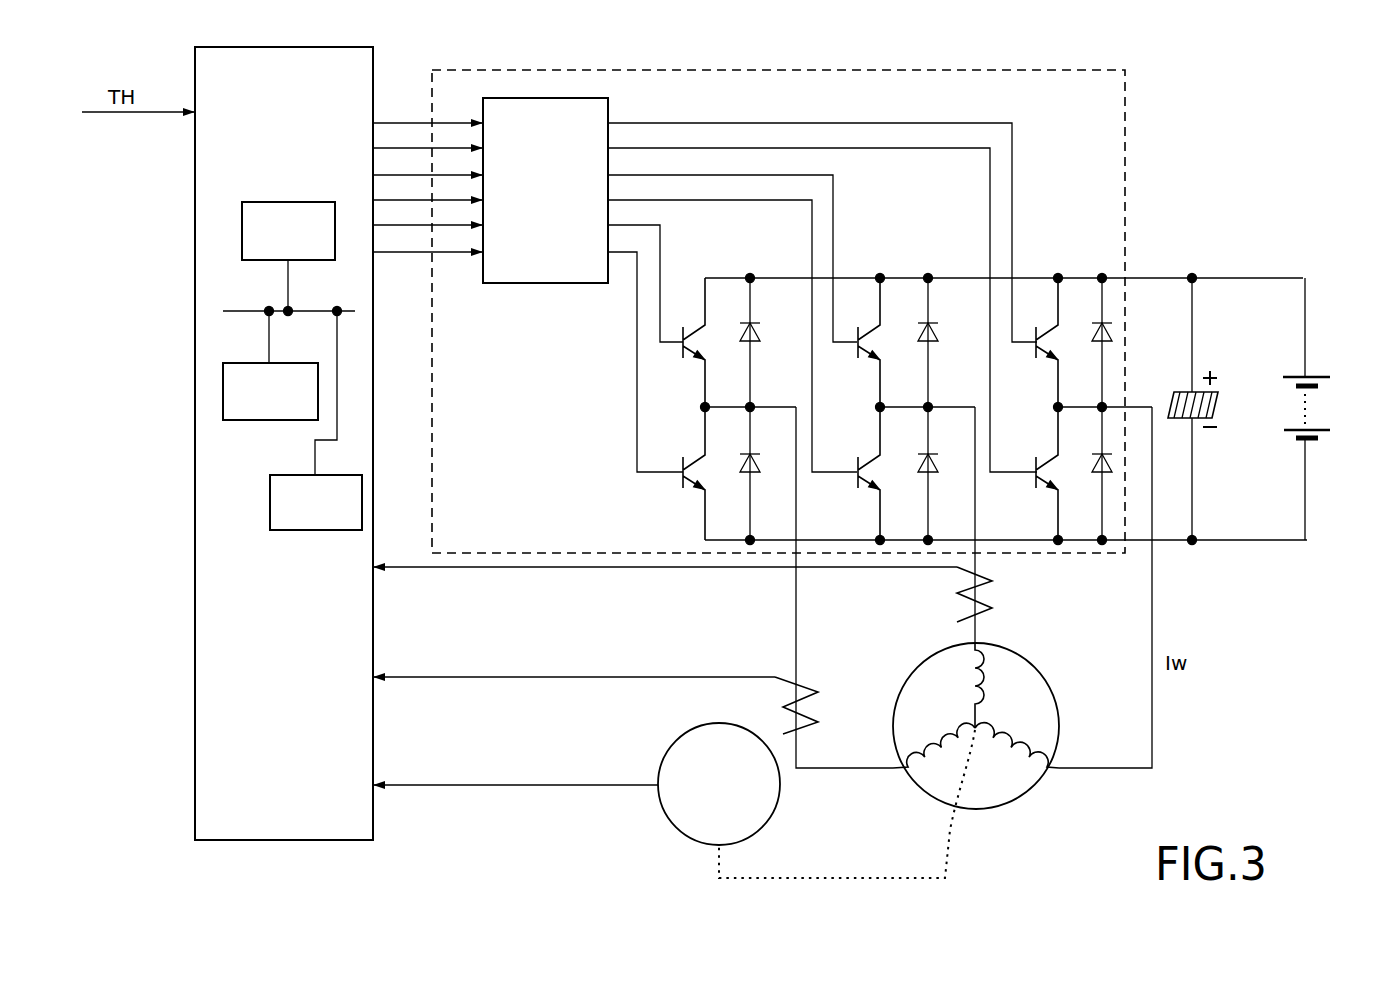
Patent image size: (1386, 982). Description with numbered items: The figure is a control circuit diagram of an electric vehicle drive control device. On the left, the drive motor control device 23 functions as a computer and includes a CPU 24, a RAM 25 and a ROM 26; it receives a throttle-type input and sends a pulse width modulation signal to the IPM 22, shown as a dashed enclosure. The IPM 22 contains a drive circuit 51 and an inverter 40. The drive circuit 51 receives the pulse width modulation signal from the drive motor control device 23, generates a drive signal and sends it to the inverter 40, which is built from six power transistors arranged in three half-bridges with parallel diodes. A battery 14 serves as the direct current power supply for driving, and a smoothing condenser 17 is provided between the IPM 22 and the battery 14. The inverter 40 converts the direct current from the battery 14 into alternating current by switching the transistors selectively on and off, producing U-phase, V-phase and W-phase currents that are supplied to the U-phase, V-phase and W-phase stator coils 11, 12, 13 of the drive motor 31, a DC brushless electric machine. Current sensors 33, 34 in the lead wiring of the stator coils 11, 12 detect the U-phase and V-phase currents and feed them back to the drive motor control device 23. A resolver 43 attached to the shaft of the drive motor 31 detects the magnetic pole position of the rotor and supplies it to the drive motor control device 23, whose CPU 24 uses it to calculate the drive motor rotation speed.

The drive motor control device 23 is at (392, 53).
The IPM 22 is at (870, 66).
The CPU 24 is at (295, 202).
The RAM 25 is at (257, 420).
The ROM 26 is at (320, 530).
The drive circuit 51 is at (552, 283).
The inverter 40 is at (1038, 247).
The condenser 17 is at (1187, 390).
The battery 14 is at (1317, 373).
The drive motor 31 is at (928, 731).
The U-phase stator coil 11 is at (962, 780).
The V-phase stator coil 12 is at (975, 700).
The W-phase stator coil 13 is at (1000, 730).
The current sensor 33 is at (812, 680).
The current sensor 34 is at (958, 593).
The resolver 43 is at (675, 830).